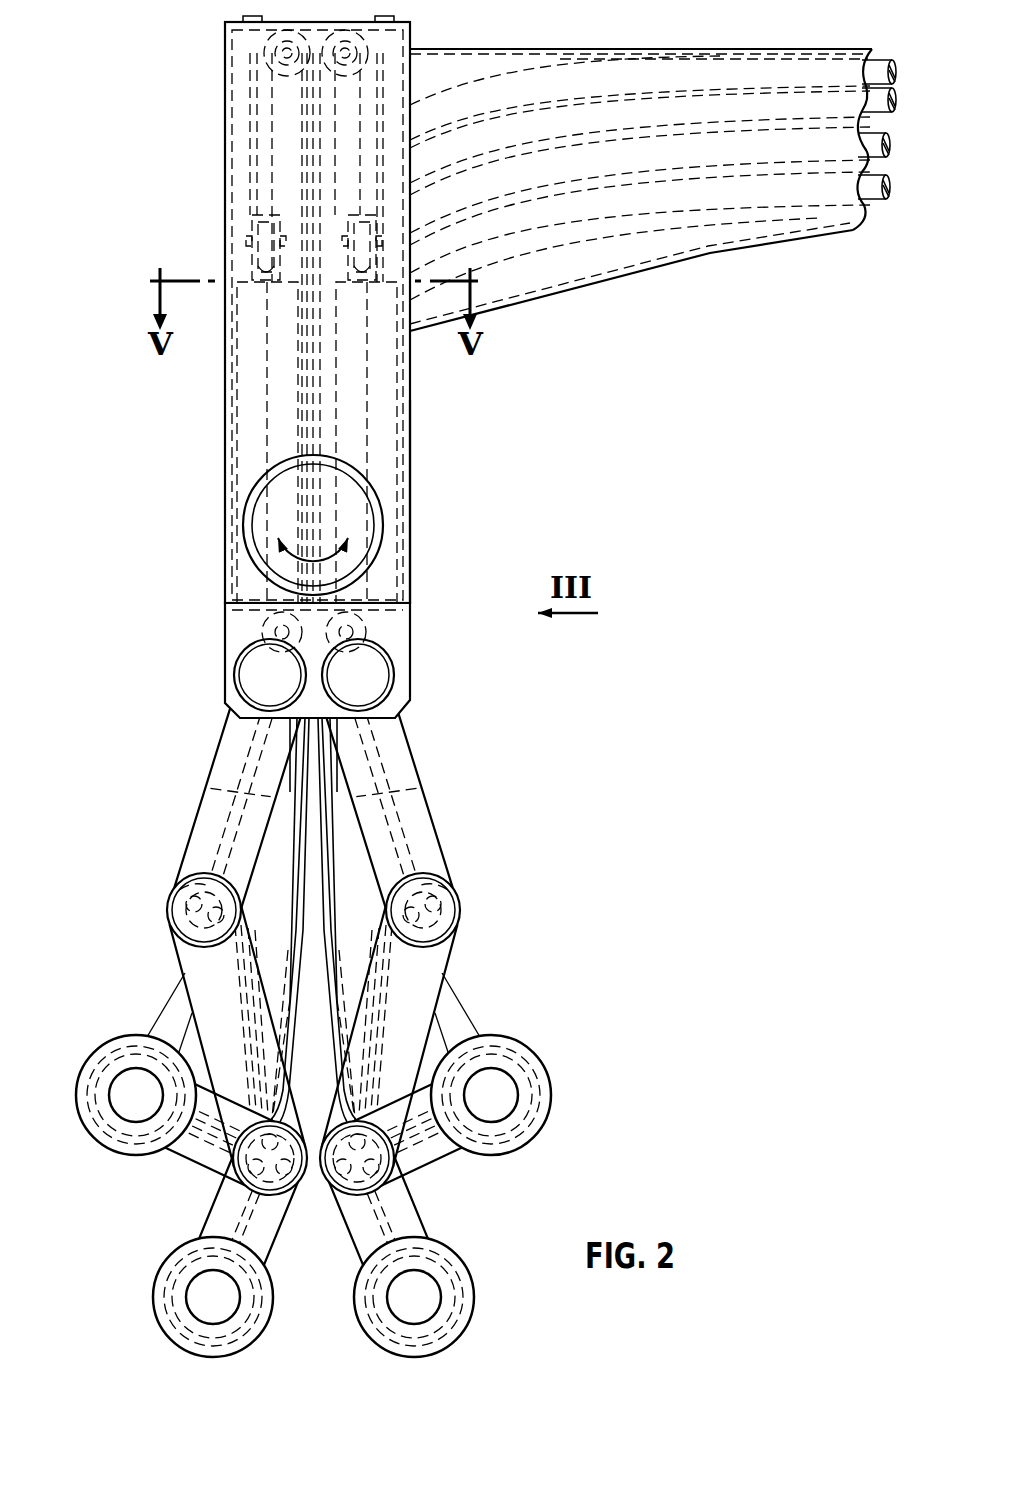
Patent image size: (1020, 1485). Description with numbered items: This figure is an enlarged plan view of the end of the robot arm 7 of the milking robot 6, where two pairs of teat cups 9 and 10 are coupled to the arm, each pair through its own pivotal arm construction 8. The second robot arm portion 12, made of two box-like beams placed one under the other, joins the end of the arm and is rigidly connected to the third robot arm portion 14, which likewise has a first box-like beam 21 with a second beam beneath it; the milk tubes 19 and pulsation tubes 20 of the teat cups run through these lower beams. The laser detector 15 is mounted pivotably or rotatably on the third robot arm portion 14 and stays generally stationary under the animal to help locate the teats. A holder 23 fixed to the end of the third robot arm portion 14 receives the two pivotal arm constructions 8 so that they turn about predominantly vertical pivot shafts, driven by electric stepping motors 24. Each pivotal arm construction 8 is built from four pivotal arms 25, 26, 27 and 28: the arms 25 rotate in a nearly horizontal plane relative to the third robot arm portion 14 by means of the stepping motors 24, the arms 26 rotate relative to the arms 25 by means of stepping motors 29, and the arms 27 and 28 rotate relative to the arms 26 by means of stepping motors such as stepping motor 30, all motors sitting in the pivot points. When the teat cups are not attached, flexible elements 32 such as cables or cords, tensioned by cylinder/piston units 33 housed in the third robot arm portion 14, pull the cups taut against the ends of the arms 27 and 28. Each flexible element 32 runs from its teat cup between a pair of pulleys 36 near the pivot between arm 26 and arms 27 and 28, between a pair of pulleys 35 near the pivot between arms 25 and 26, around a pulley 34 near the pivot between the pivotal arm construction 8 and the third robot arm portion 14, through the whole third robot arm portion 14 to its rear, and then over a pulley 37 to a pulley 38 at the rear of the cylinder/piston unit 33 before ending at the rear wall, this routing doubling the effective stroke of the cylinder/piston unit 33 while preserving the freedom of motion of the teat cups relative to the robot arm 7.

The milking robot 6 is at (688, 361).
The robot arm 7 is at (745, 78).
The pivotal arm construction 8 is at (304, 1002).
The teat cup 9 is at (268, 1308).
The teat cup 10 is at (95, 1074).
The second robot arm portion 12 is at (690, 260).
The third robot arm portion 14 is at (222, 447).
The laser detector 15 is at (280, 513).
The milk tube 19 is at (720, 143).
The pulsation tube 20 is at (737, 192).
The first box-like beam 21 is at (410, 572).
The holder 23 is at (228, 655).
The stepping motor 24 is at (258, 680).
The pivotal arm 25 is at (220, 764).
The pivotal arm 26 is at (198, 978).
The pivotal arm 27 is at (213, 1226).
The pivotal arm 28 is at (190, 1148).
The stepping motor 29 is at (190, 930).
The stepping motor 30 is at (306, 1182).
The flexible element 32 is at (265, 168).
The cylinder/piston unit 33 is at (277, 406).
The pulley 34 is at (276, 626).
The pulley 35 is at (172, 898).
The pulley 36 is at (225, 1170).
The pulley 37 is at (275, 58).
The pulley 38 is at (250, 230).